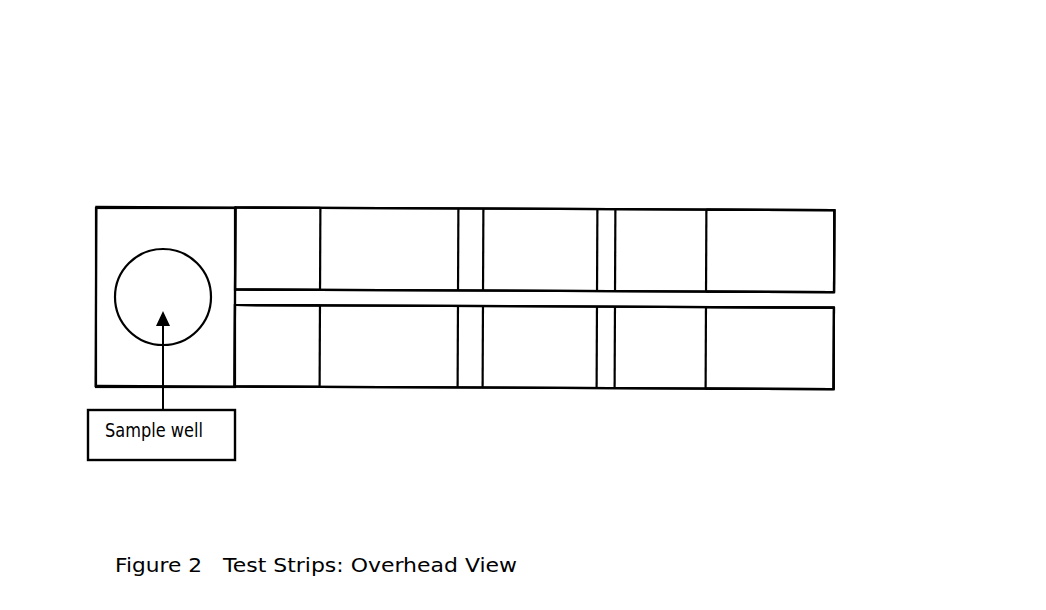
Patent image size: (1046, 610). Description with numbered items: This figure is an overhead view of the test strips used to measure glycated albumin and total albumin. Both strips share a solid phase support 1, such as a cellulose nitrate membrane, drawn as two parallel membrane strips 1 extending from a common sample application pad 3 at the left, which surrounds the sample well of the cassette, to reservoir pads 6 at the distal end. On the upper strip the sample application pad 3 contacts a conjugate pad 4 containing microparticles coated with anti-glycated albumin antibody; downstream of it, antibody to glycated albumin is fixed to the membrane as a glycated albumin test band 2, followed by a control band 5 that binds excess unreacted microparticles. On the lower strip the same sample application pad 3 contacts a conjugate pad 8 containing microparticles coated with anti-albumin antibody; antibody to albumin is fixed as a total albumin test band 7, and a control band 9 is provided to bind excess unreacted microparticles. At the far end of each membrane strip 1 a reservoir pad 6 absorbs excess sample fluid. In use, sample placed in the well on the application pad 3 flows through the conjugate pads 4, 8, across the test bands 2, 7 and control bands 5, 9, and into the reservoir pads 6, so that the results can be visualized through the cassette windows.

The solid phase support 1 is at (629, 279).
The glycated albumin test band 2 is at (470, 252).
The sample application pad 3 is at (114, 236).
The conjugate pad 4 is at (271, 238).
The glycated albumin control band 5 is at (603, 207).
The reservoir pad 6 is at (765, 340).
The total albumin test band 7 is at (470, 373).
The conjugate pad 8 is at (277, 372).
The total albumin control band 9 is at (603, 378).